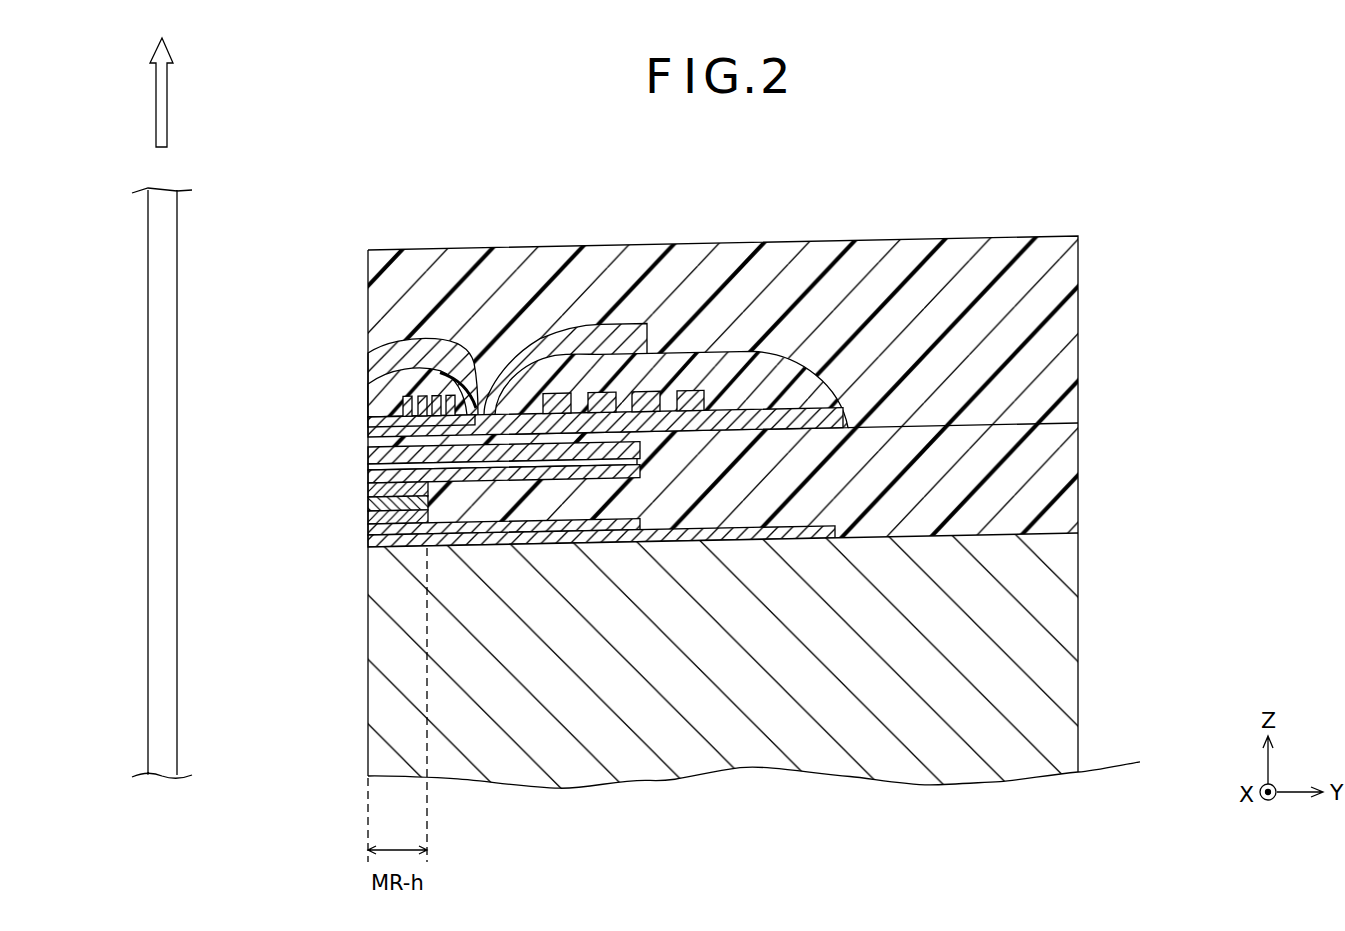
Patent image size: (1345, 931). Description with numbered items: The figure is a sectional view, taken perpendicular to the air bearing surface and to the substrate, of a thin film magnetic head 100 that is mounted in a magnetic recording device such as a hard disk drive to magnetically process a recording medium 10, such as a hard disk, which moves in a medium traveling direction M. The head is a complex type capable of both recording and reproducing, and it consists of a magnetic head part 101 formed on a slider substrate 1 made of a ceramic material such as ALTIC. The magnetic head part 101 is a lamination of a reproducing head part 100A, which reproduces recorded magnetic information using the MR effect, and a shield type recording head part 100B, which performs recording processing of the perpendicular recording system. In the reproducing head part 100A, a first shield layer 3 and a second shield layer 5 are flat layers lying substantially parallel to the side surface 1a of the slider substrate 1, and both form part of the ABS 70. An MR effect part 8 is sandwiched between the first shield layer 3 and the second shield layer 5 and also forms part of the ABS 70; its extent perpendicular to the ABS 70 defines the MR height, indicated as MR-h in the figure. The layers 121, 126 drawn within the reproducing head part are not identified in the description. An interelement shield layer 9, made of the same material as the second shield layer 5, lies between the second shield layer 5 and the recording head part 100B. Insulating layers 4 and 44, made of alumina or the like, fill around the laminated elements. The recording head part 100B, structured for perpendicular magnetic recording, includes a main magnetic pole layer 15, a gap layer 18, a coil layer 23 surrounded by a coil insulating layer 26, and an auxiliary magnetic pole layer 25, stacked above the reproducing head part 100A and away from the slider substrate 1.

The slider substrate 1 is at (1080, 638).
The side surface of the slider substrate 1a is at (1047, 530).
The first shield layer 3 is at (570, 576).
The insulating layer 4 is at (1080, 492).
The second shield layer 5 is at (370, 483).
The MR effect part 8 is at (361, 514).
The interelement shield layer 9 is at (370, 461).
The recording medium 10 is at (148, 652).
The main magnetic pole layer 15 is at (370, 437).
The gap layer 18 is at (370, 425).
The coil layer 23 is at (370, 410).
The auxiliary magnetic pole layer 25 is at (370, 368).
The coil insulating layer 26 is at (370, 400).
The insulating layer 44 is at (1080, 302).
The ABS 70 is at (358, 607).
The thin film magnetic head 100 is at (1110, 358).
The reproducing head part 100A is at (516, 548).
The recording head part 100B is at (523, 323).
The magnetic head part 101 is at (687, 407).
The MR element lower layer 121 is at (370, 524).
The MR element (magnetoresistive layer) 126 is at (370, 496).
The medium traveling direction M is at (170, 107).